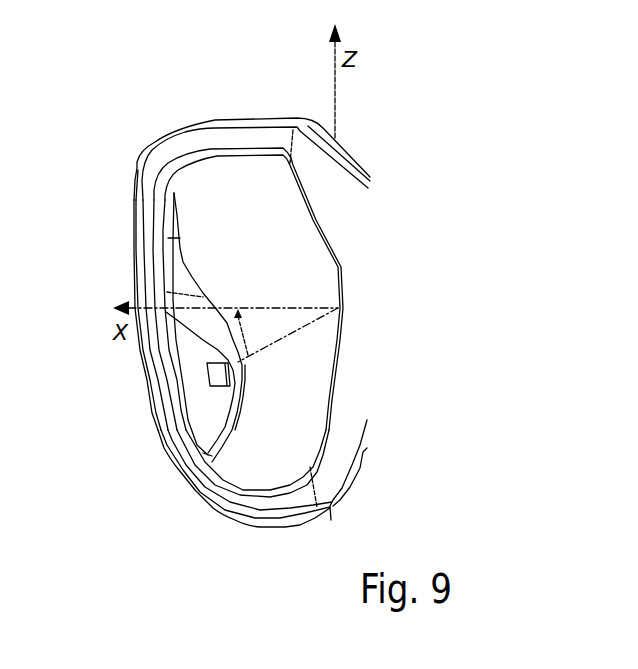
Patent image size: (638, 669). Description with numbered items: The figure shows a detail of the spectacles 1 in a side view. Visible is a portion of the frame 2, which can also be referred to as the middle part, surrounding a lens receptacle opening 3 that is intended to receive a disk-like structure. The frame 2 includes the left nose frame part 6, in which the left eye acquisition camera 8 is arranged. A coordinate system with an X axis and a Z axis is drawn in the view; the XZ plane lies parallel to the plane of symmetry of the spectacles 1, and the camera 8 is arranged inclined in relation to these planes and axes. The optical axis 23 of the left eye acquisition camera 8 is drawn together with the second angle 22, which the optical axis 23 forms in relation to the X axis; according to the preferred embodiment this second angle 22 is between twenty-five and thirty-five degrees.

The spectacles 1 is at (264, 316).
The frame 2 is at (220, 135).
The lens receptacle opening 3 is at (255, 483).
The left nose frame part 6 is at (184, 370).
The left eye acquisition camera 8 is at (215, 380).
The second angle 22 is at (241, 330).
The optical axis 23 is at (262, 352).